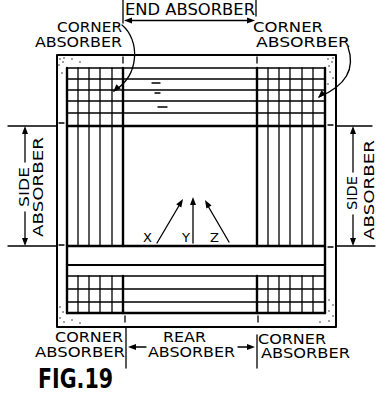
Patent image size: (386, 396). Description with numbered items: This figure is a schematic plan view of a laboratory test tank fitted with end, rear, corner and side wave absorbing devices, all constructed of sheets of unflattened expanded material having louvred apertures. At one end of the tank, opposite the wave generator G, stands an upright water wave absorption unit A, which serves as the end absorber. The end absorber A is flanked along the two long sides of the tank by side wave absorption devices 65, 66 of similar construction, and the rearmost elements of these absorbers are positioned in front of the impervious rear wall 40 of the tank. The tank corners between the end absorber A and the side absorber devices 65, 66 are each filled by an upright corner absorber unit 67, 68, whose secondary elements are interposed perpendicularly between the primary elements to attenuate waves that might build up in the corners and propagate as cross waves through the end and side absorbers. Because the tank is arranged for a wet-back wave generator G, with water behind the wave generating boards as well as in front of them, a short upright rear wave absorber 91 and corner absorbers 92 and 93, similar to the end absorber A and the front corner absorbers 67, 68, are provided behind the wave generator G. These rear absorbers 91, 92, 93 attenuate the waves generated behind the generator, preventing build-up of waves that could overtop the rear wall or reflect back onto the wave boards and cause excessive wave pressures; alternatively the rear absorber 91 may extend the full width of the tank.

The impervious rear wall 40 is at (336, 116).
The side wave absorption device 65 is at (106, 174).
The side wave absorption device 66 is at (285, 177).
The corner absorber unit 67 is at (106, 104).
The corner absorber unit 68 is at (280, 96).
The rear wave absorber 91 is at (248, 286).
The corner absorber 92 is at (96, 296).
The corner absorber 93 is at (326, 300).
The wave generator G is at (311, 254).
The water wave absorption unit A is at (208, 128).